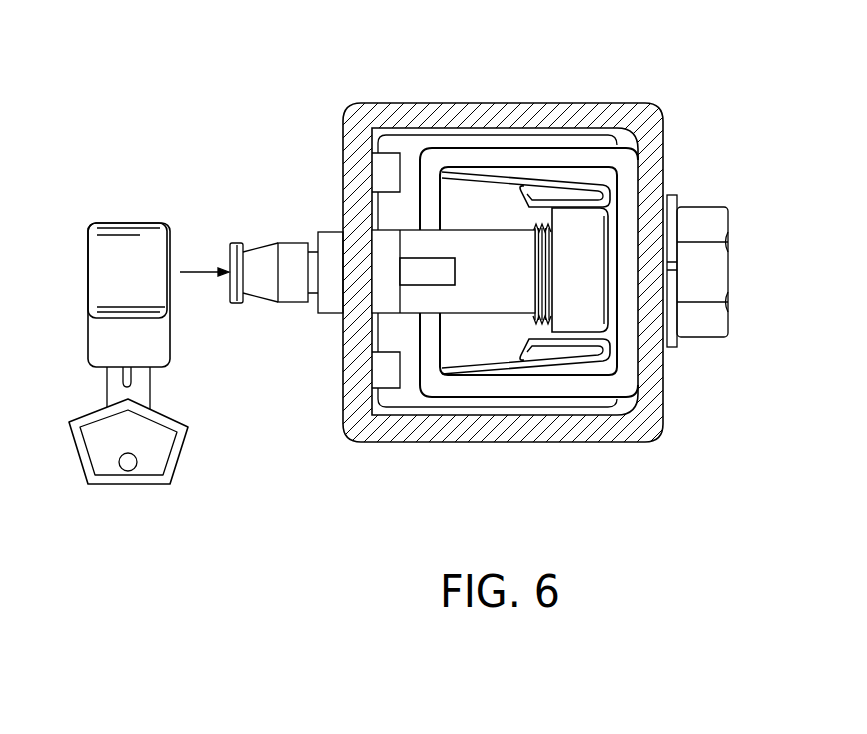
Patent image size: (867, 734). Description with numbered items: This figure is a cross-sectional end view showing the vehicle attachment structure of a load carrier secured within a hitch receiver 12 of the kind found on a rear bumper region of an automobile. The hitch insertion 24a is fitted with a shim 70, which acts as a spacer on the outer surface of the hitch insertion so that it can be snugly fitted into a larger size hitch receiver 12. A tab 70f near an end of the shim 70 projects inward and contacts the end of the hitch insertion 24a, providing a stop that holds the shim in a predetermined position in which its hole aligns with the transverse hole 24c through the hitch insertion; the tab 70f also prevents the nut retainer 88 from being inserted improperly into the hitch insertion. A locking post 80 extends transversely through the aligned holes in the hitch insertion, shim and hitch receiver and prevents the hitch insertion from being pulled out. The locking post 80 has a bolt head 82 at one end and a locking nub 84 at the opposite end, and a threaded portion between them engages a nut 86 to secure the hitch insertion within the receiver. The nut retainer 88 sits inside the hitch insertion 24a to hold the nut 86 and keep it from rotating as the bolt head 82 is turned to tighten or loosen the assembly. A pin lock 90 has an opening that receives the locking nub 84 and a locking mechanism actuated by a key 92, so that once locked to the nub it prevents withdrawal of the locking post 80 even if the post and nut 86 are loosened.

The hitch receiver 12 is at (618, 430).
The shim 70 is at (522, 137).
The tab 70f is at (447, 262).
The hitch insertion 24a is at (628, 375).
The transverse hole 24c is at (423, 232).
The nut retainer 88 is at (613, 232).
The nut 86 is at (592, 313).
The locking post 80 is at (482, 313).
The bolt head 82 is at (712, 260).
The locking nub 84 is at (265, 288).
The pin lock 90 is at (93, 295).
The key 92 is at (95, 428).